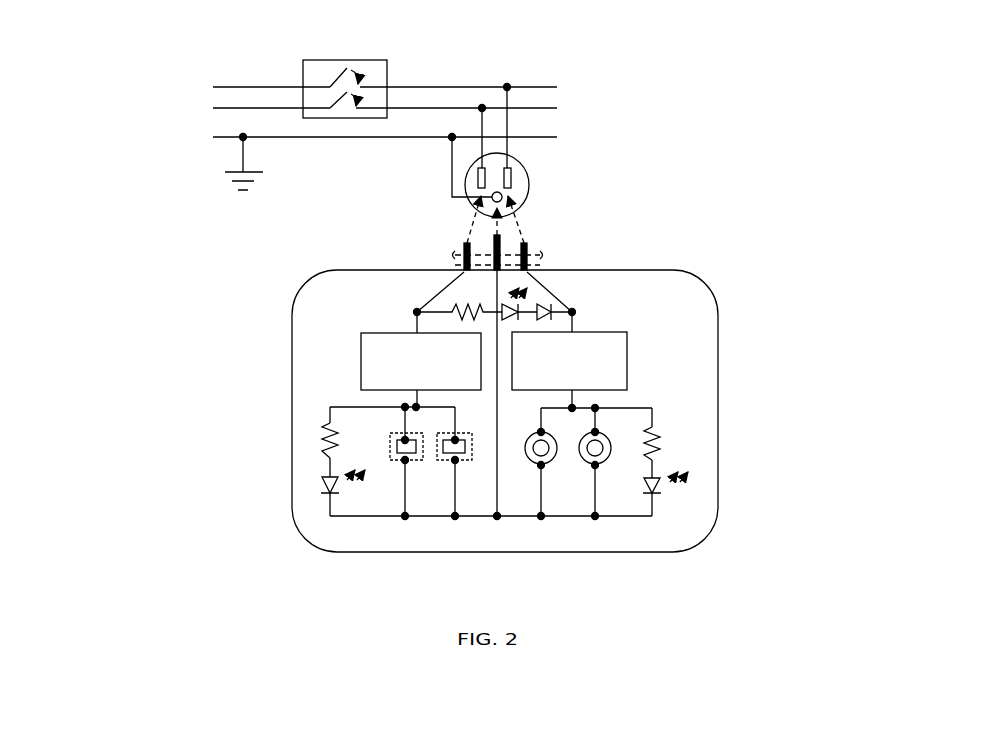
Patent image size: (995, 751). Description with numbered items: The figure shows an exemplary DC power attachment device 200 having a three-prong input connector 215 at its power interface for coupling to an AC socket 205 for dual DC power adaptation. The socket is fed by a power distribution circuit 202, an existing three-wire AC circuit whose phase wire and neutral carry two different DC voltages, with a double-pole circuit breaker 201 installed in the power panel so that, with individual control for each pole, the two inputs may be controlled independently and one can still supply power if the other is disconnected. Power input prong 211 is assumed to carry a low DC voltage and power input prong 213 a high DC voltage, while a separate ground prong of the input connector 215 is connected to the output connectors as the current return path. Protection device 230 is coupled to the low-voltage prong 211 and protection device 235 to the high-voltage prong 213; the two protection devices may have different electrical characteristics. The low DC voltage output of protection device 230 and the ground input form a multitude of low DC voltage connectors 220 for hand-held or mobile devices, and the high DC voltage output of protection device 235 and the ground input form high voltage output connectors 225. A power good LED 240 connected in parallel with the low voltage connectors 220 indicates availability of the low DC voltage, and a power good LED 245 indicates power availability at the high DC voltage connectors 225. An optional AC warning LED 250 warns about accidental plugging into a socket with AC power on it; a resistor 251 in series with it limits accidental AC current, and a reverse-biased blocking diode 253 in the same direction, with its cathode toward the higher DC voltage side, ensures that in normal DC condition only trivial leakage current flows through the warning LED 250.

The DC power attachment device 200 is at (288, 316).
The double-pole circuit breaker 201 is at (303, 61).
The power distribution circuit 202 is at (575, 87).
The AC socket 205 is at (529, 177).
The power input prong 211 is at (463, 250).
The power input prong 213 is at (527, 250).
The 3-prong input connector 215 is at (485, 252).
The low DC voltage connectors 220 is at (432, 430).
The high voltage output connectors 225 is at (558, 433).
The protection device 230 is at (421, 361).
The protection device 235 is at (569, 361).
The power good LED 240 is at (312, 480).
The power good LED 245 is at (751, 464).
The AC warning LED 250 is at (527, 300).
The resistor 251 is at (450, 304).
The reverse-biased blocking diode 253 is at (548, 307).